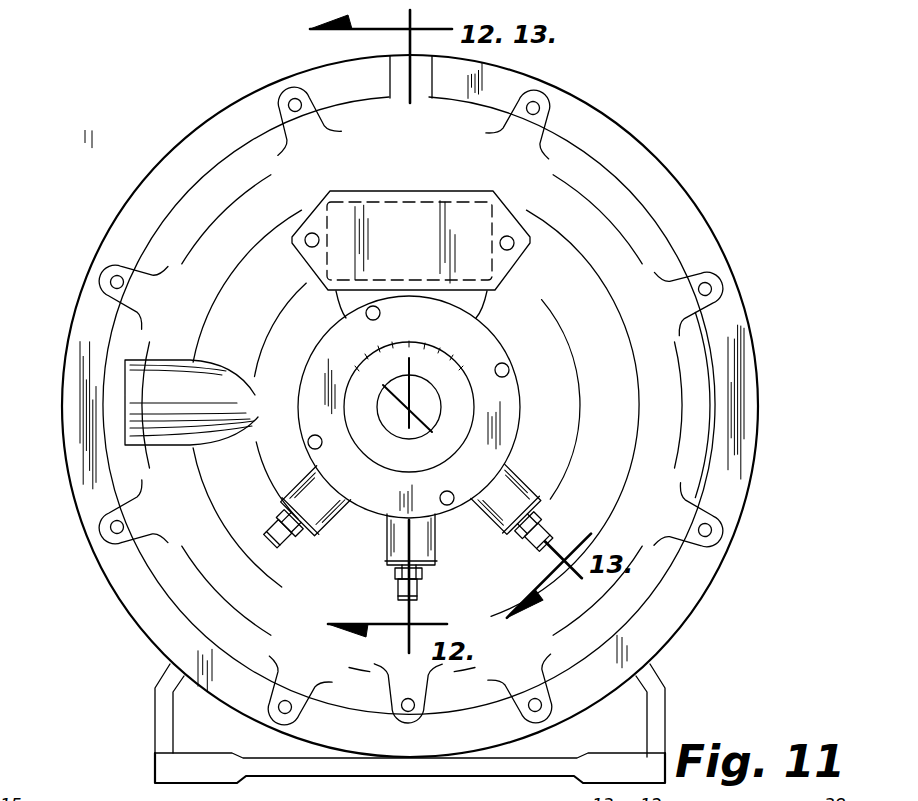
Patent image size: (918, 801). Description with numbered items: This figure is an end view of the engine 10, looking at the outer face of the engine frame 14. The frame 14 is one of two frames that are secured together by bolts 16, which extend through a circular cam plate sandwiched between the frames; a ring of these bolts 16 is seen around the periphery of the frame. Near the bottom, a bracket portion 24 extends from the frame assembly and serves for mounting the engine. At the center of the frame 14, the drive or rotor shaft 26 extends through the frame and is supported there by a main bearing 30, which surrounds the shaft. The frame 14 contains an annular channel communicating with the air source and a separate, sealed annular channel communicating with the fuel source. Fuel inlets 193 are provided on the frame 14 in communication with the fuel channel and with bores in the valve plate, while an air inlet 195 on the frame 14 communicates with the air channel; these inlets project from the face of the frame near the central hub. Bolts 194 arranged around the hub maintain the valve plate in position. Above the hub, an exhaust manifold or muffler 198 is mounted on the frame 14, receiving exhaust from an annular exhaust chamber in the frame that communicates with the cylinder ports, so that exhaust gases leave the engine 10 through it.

The engine 10 is at (728, 120).
The engine frame 14 is at (618, 221).
The bolts 16 is at (290, 100).
The bracket portion 24 is at (170, 762).
The drive or rotor shaft 26 is at (425, 408).
The main bearing 30 is at (453, 437).
The fuel inlets 193 is at (317, 517).
The bolts 194 is at (367, 316).
The air inlet 195 is at (422, 552).
The exhaust manifold or muffler 198 is at (467, 220).